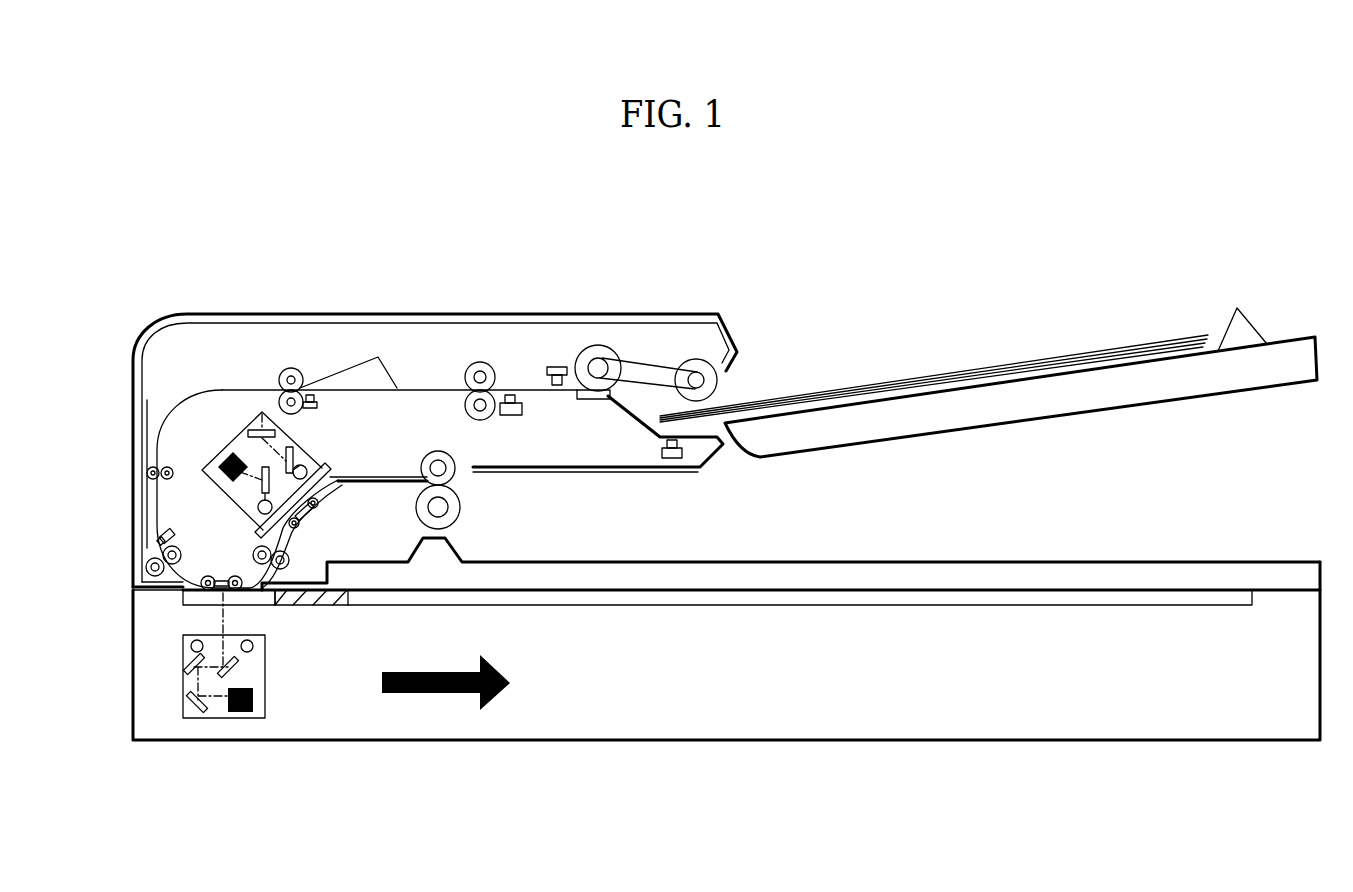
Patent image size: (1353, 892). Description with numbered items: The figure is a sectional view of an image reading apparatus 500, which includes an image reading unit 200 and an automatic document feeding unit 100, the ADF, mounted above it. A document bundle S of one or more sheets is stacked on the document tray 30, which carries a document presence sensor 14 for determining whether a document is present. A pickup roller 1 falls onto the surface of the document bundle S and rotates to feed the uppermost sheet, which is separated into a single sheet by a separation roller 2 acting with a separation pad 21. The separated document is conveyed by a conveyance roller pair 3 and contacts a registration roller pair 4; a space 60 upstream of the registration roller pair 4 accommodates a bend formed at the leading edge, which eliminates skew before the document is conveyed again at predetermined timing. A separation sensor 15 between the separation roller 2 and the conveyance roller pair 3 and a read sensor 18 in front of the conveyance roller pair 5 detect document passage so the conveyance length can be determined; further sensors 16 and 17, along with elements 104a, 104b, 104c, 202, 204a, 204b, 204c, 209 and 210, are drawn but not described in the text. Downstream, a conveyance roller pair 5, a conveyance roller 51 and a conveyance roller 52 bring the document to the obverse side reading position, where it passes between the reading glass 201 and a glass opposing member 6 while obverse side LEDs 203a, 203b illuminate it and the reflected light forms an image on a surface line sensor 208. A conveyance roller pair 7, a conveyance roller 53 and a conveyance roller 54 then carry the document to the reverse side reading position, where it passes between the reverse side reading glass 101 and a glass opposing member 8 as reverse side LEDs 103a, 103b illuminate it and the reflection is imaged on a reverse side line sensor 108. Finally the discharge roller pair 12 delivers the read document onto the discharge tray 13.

The image reading apparatus 500 is at (797, 221).
The automatic document feeding unit 100 is at (372, 294).
The image reading unit 200 is at (1175, 741).
The pickup roller 1 is at (719, 389).
The separation roller 2 is at (614, 346).
The conveyance roller pair 3 is at (468, 369).
The registration roller pair 4 is at (289, 369).
The conveyance roller pair 5 is at (152, 559).
The glass opposing member 6 is at (220, 578).
The conveyance roller pair 7 is at (290, 560).
The glass opposing member 8 is at (300, 522).
The discharge roller pair 12 is at (438, 451).
The discharge tray 13 is at (733, 560).
The document presence sensor 14 is at (662, 452).
The separation sensor 15 is at (556, 367).
The sensor 16 is at (510, 415).
The sensor 17 is at (320, 402).
The read sensor 18 is at (163, 531).
The separation pad 21 is at (587, 400).
The document tray 30 is at (1058, 416).
The conveyance roller 51 is at (134, 591).
The conveyance roller 52 is at (236, 578).
The conveyance roller 53 is at (300, 532).
The conveyance roller 54 is at (319, 503).
The space 60 is at (341, 372).
The reverse side reading glass 101 is at (341, 476).
The reverse side LED 103a is at (258, 507).
The reverse side LED 103b is at (307, 466).
The mirror 104a is at (261, 482).
The mirror 104b is at (292, 449).
The mirror 104c is at (260, 428).
The reverse side line sensor 108 is at (228, 454).
The reading glass 201 is at (197, 605).
The reading unit 202 is at (238, 635).
The obverse side LED 203a is at (254, 648).
The obverse side LED 203b is at (191, 646).
The mirror 204a is at (242, 670).
The mirror 204b is at (186, 667).
The mirror 204c is at (188, 700).
The surface line sensor 208 is at (254, 702).
The platen glass 209 is at (720, 606).
The white reference plate 210 is at (343, 600).
The document bundle S is at (1013, 363).